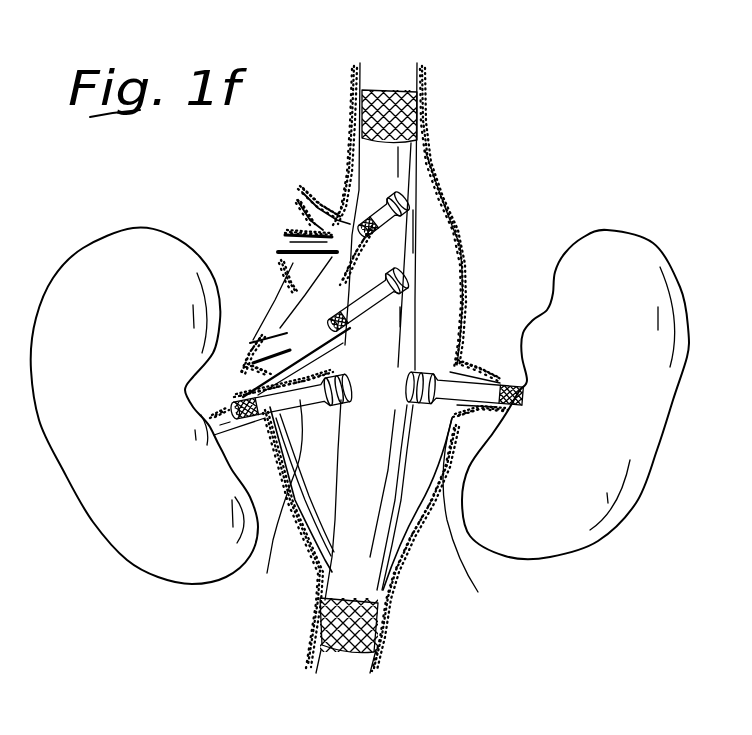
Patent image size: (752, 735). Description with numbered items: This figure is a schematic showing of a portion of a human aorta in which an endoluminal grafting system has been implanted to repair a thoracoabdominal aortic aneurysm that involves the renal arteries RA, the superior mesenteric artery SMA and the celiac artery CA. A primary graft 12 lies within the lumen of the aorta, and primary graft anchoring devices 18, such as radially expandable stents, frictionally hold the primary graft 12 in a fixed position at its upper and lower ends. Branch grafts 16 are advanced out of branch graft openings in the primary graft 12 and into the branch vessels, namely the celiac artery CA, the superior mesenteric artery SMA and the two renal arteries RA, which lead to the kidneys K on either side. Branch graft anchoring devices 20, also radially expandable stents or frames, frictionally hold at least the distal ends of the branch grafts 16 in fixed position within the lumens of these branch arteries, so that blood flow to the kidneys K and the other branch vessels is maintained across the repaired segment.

The primary graft 12 is at (415, 303).
The branch graft 16 is at (379, 383).
The primary graft anchoring device 18 is at (403, 117).
The branch graft anchoring device 20 is at (242, 403).
The kidneys K is at (131, 428).
The renal arteries RA is at (200, 462).
The superior mesenteric artery SMA is at (305, 330).
The celiac artery CA is at (322, 222).